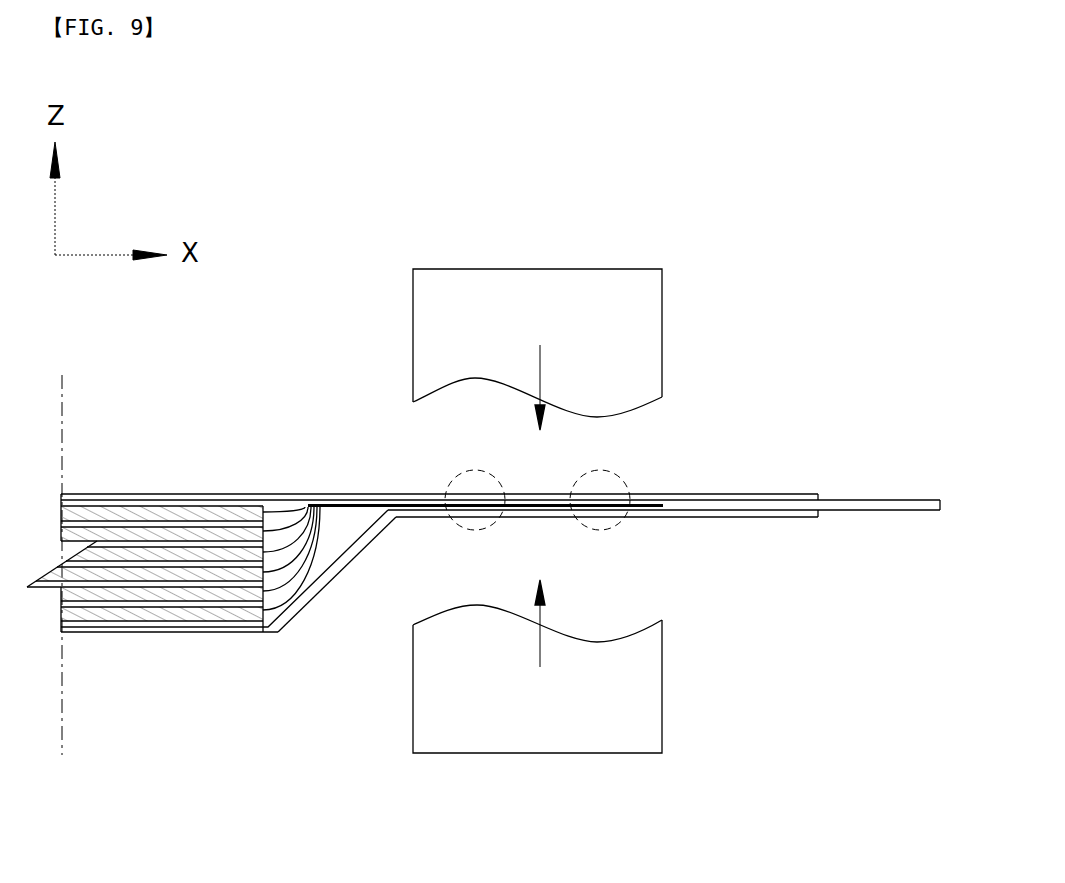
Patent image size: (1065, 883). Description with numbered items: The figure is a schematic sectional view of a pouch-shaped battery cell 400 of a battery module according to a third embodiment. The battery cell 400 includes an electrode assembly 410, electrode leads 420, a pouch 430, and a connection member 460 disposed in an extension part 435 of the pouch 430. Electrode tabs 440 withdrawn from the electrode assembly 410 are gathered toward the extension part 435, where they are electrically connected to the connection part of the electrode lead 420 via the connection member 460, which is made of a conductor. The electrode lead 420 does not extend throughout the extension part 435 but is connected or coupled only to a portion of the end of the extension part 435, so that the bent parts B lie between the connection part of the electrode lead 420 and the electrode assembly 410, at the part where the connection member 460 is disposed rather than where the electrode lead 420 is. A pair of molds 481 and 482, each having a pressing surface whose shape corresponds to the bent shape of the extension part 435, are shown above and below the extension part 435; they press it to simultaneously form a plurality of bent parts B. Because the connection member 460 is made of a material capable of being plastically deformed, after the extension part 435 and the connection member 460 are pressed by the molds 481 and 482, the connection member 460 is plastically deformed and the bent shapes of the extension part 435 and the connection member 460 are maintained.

The battery cell 400 is at (305, 237).
The electrode assembly 410 is at (222, 612).
The electrode lead 420 is at (885, 512).
The pouch 430 is at (129, 470).
The extension part 435 is at (800, 495).
The electrode tab 440 is at (282, 510).
The connection member 460 is at (353, 505).
The mold 481 is at (565, 313).
The mold 482 is at (570, 720).
The bent part B is at (462, 528).